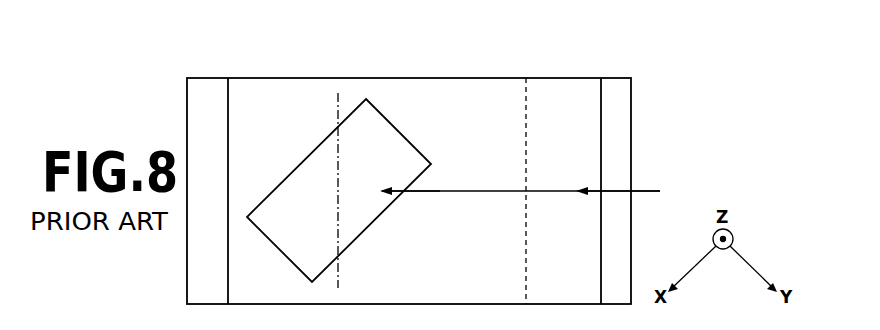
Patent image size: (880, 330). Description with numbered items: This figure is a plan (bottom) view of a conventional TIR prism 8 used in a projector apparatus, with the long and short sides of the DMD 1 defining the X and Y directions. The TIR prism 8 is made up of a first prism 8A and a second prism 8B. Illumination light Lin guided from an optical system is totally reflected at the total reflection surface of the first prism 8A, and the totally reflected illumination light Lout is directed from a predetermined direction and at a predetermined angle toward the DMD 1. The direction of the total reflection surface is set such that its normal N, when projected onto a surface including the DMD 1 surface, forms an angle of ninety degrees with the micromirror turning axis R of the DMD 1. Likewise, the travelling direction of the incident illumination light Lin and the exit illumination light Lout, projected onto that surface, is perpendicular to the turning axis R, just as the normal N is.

The TIR prism 8 is at (457, 58).
The first prism 8A is at (497, 85).
The second prism 8B is at (210, 85).
The DMD 1 is at (320, 144).
The micromirror turning axis R is at (340, 275).
The normal to the total reflection surface N is at (481, 189).
The illumination light Lin is at (554, 189).
The totally reflected illumination light Lout is at (441, 194).